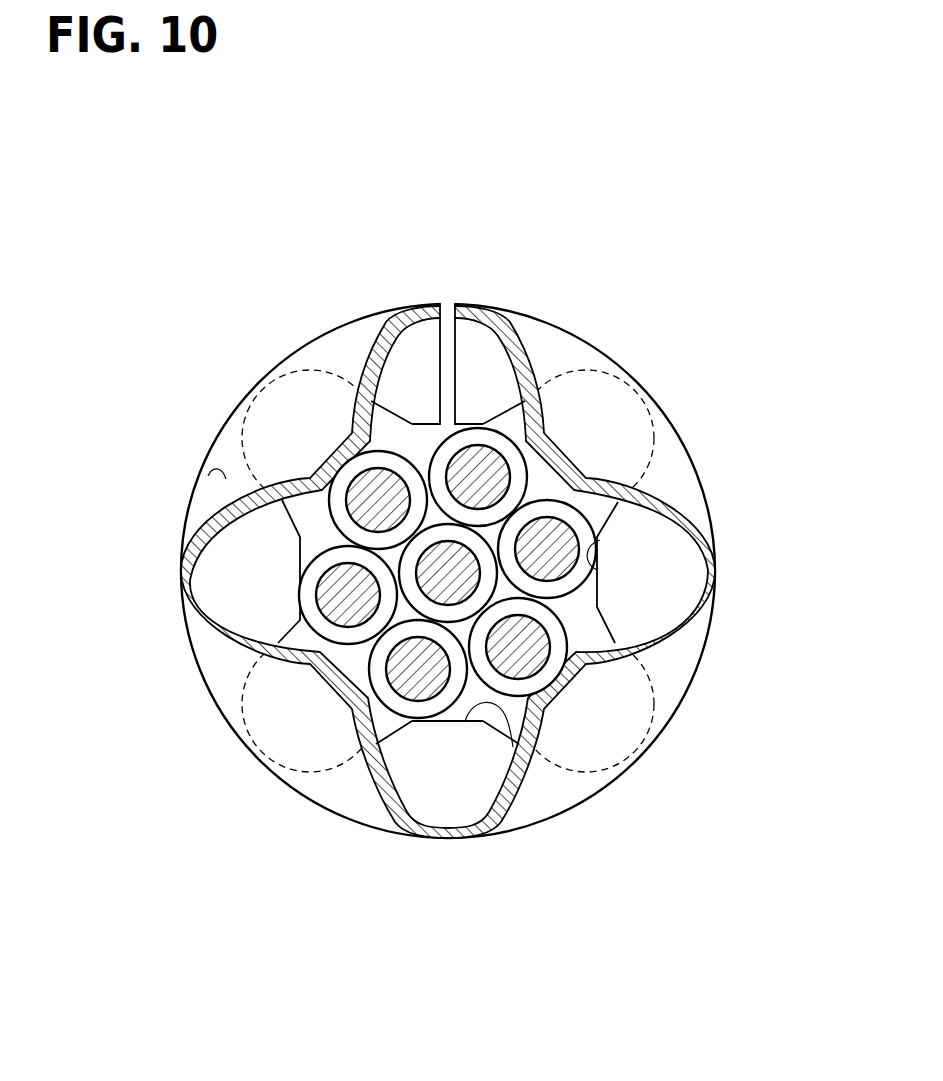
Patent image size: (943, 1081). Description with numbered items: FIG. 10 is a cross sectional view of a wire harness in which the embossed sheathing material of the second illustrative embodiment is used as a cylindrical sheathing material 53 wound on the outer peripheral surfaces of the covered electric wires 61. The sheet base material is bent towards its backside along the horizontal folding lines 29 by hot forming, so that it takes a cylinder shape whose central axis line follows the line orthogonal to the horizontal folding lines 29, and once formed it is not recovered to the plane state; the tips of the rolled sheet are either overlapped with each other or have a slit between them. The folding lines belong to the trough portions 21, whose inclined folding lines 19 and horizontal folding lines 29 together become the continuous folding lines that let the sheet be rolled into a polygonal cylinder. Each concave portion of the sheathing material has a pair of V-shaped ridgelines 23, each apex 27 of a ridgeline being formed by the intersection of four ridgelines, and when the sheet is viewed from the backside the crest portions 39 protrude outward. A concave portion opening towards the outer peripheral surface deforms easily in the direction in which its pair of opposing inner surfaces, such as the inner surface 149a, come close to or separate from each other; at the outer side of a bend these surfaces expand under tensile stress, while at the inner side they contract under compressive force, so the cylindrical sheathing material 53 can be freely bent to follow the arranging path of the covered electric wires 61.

The inclined folding line 19 is at (383, 343).
The trough portion 21 is at (793, 677).
The V-shaped ridgeline 23 is at (523, 311).
The apex 27 is at (717, 569).
The horizontal folding line 29 is at (563, 448).
The crest portion 39 is at (296, 490).
The cylindrical sheathing material 53 is at (248, 332).
The covered electric wire 61 is at (575, 647).
The opposing inner surface 149a is at (213, 476).